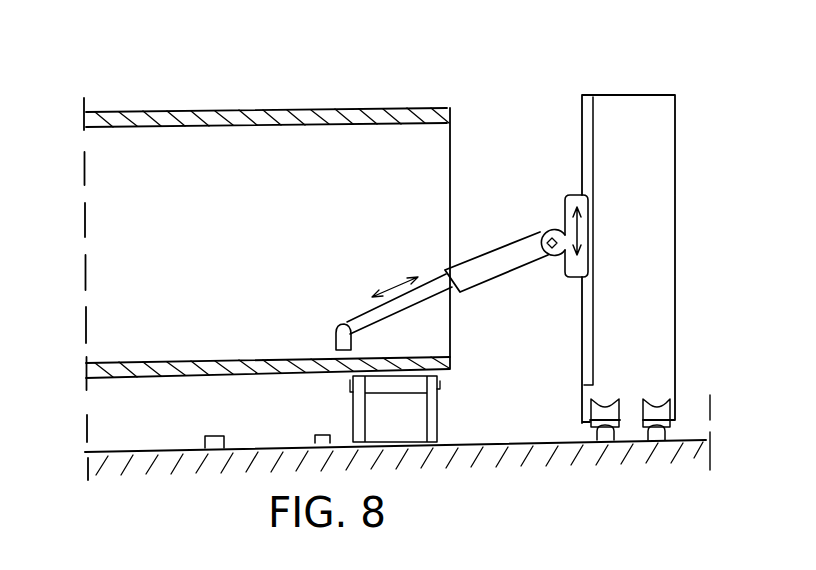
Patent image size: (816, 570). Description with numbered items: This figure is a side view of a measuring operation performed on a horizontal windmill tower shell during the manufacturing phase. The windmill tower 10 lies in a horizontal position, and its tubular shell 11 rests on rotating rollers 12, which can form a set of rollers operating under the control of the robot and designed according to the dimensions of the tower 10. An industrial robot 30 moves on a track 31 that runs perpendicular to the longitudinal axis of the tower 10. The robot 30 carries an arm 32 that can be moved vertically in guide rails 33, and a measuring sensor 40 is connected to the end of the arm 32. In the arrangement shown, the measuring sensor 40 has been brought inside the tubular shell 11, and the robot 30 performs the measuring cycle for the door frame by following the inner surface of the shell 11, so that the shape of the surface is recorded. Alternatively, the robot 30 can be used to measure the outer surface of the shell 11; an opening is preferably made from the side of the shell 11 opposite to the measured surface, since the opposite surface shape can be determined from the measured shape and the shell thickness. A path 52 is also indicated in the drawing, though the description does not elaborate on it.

The windmill tower 10 is at (302, 96).
The tubular shell 11 is at (237, 112).
The rotating rollers 12 is at (408, 392).
The industrial robot 30 is at (658, 82).
The track 31 is at (598, 437).
The arm 32 is at (493, 248).
The guide rail 33 is at (578, 137).
The measuring sensor 40 is at (332, 340).
The path 52 is at (205, 438).